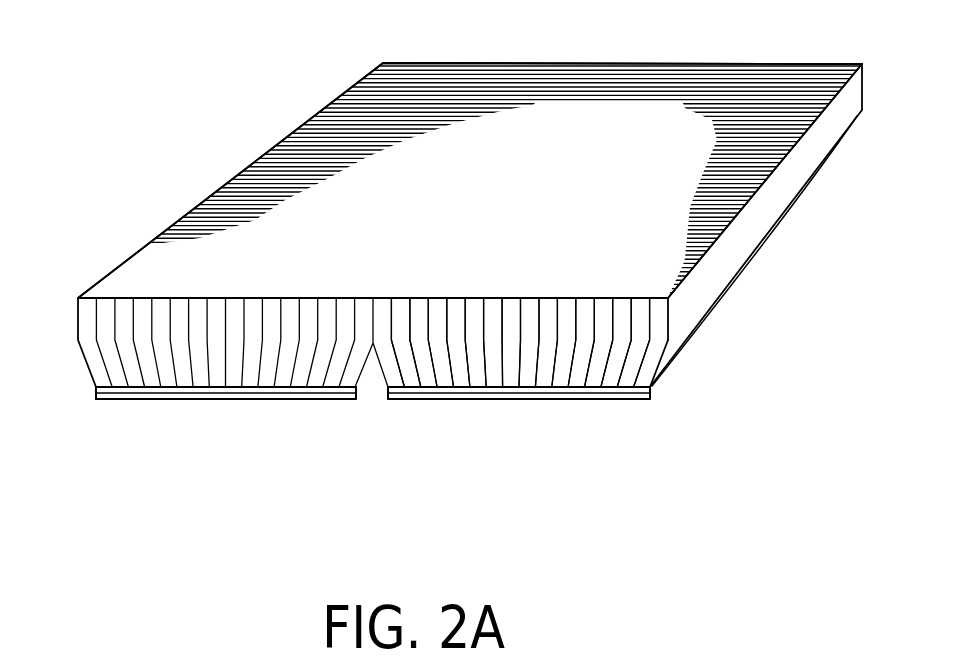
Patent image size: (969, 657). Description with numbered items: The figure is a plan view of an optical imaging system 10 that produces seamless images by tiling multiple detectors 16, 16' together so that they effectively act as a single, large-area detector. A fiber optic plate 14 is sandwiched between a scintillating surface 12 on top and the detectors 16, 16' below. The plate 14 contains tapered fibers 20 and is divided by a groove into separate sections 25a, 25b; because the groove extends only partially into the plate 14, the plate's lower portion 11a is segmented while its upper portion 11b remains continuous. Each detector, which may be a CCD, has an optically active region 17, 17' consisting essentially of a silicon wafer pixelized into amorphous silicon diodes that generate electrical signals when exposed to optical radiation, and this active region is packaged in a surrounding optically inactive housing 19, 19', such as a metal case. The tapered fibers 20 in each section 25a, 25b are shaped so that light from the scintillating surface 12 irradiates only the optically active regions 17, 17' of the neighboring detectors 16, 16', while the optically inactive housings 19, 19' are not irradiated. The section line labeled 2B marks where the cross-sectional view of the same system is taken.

The optical imaging system 10 is at (280, 60).
The scintillating surface 12 is at (143, 272).
The fiber optic plate 14 is at (77, 338).
The detector 16 is at (226, 437).
The detector 16' is at (501, 437).
The optically active region 17 is at (190, 373).
The optically active region 17' is at (561, 371).
The housing 19 is at (190, 421).
The housing 19' is at (558, 423).
The tapered fibers 20 is at (583, 307).
The section line 2B is at (408, 410).
The section 25a is at (352, 497).
The section 25b is at (650, 497).
The lower portion 11a is at (788, 348).
The upper portion 11b is at (788, 292).